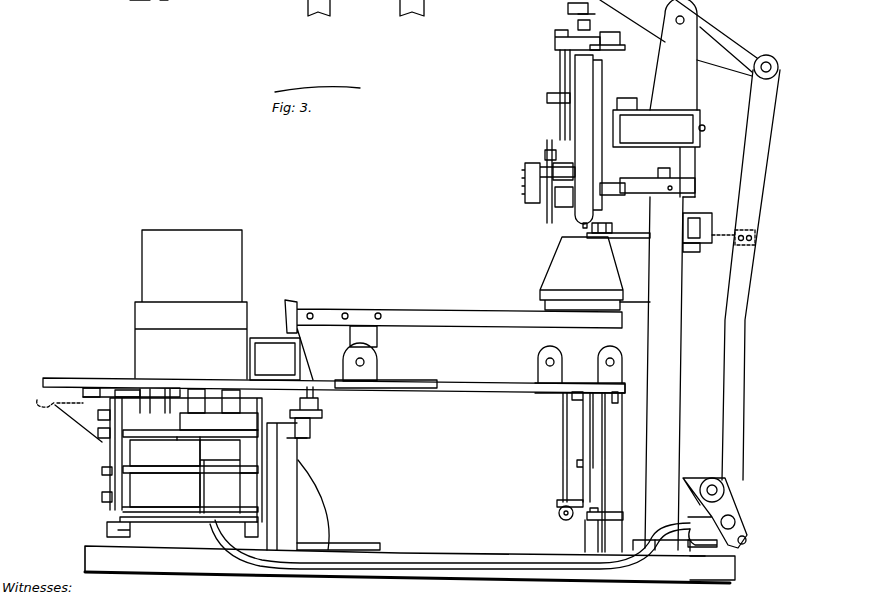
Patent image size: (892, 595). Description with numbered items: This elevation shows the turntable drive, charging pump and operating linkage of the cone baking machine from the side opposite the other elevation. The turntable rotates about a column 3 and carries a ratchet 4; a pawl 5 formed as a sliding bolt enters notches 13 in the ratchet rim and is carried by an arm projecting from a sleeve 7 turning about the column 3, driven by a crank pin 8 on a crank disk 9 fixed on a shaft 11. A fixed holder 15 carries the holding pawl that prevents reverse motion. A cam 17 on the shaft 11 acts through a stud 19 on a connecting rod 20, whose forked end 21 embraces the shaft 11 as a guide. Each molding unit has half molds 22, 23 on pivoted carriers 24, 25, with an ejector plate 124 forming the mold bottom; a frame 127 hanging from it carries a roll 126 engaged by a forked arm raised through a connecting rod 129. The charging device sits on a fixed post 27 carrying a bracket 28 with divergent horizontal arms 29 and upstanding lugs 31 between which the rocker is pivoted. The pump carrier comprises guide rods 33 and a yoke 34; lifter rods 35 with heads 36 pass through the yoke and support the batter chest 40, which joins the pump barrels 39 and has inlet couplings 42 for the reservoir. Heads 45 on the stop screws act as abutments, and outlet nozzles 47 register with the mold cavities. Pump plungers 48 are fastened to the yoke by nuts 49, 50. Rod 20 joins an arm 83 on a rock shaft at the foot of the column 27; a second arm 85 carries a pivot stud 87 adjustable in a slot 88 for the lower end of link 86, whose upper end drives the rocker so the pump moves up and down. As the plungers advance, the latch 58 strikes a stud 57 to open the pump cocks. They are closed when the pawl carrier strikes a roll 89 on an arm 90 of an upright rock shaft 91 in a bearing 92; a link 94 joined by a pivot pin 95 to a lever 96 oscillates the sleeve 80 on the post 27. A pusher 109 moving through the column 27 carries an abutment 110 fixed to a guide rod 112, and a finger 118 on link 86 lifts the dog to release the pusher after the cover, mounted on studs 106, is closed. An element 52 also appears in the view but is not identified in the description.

The column 3 is at (250, 280).
The ratchet 4 is at (60, 382).
The pawl 5 is at (232, 382).
The sleeve 7 is at (145, 388).
The crank pin 8 is at (168, 388).
The crank disk 9 is at (190, 440).
The shaft 11 is at (175, 487).
The notches 13 is at (90, 384).
The fixed holder 15 is at (51, 414).
The cam 17 is at (108, 522).
The stud 19 is at (208, 512).
The connecting rod 20 is at (418, 568).
The forked end 21 is at (508, 392).
The half mold 22 is at (560, 250).
The half mold 23 is at (600, 347).
The pivoted carrier 24 is at (535, 347).
The pivoted carrier 25 is at (630, 350).
The fixed post 27 is at (681, 296).
The bracket 28 is at (711, 127).
The horizontal arms 29 is at (647, 174).
The upstanding lugs 31 is at (700, 82).
The guide rods 33 is at (640, 72).
The yoke 34 is at (560, 64).
The lifter rods 35 is at (570, 84).
The heads 36 is at (578, 10).
The pump barrels 39 is at (553, 160).
The batter chest 40 is at (555, 216).
The inlet couplings 42 is at (523, 186).
The heads 45 is at (548, 134).
The outlet nozzles 47 is at (588, 230).
The pump plungers 48 is at (575, 116).
The securing nut 49 is at (555, 36).
The securing nut 50 is at (618, 128).
The lever 52 is at (745, 48).
The stud 57 is at (604, 40).
The latch 58 is at (588, 7).
The sleeve 80 is at (697, 165).
The arm 83 is at (728, 590).
The second arm 85 is at (750, 540).
The link 86 is at (756, 196).
The pivot stud 87 is at (752, 510).
The slot 88 is at (725, 550).
The roll 89 is at (312, 414).
The arm 90 is at (312, 432).
The upright rock shaft 91 is at (303, 452).
The bearing 92 is at (318, 490).
The link 94 is at (742, 486).
The pivot pin 95 is at (348, 8).
The lever 96 is at (139, 8).
The studs 106 is at (195, 388).
The pusher 109 is at (622, 232).
The abutment 110 is at (697, 208).
The guide rod 112 is at (694, 192).
The finger 118 is at (699, 255).
The ejector plate 124 is at (538, 300).
The roll 126 is at (545, 530).
The frame 127 is at (557, 502).
The connecting rod 129 is at (299, 8).